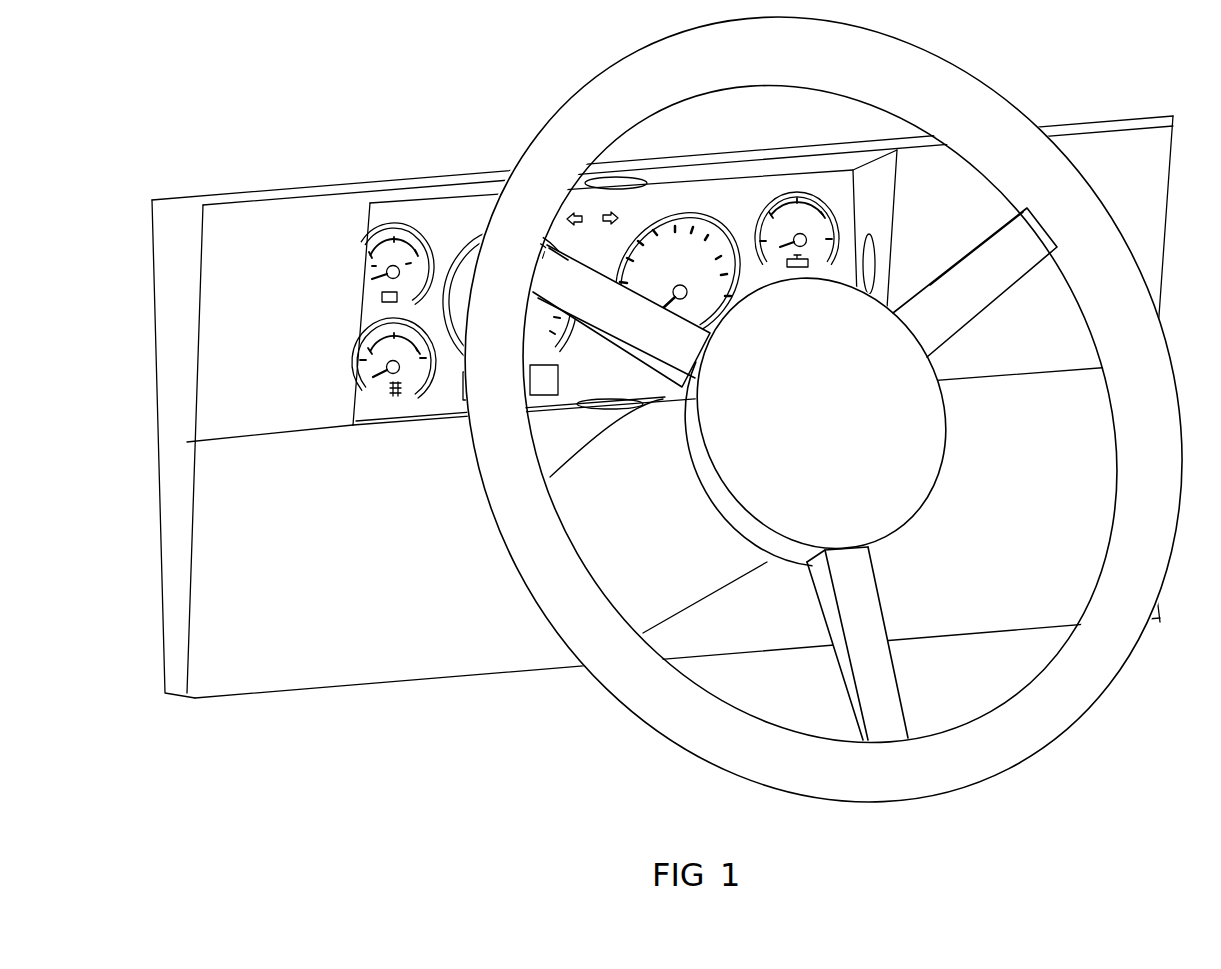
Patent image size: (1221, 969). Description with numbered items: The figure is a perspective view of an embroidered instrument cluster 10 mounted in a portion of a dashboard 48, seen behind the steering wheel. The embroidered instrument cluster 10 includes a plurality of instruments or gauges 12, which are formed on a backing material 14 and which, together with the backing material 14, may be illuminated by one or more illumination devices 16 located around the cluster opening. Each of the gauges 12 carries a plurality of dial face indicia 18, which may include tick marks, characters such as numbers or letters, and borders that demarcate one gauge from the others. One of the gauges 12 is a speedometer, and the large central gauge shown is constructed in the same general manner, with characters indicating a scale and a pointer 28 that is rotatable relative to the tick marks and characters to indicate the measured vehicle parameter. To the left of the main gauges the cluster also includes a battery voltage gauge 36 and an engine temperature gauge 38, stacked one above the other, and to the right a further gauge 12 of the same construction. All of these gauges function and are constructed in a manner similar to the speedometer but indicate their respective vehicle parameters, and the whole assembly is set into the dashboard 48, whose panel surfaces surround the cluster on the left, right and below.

The embroidered instrument cluster 10 is at (460, 213).
The gauges 12 is at (443, 398).
The backing material 14 is at (583, 255).
The illumination devices 16 is at (630, 178).
The dial face indicia 18 is at (727, 222).
The pointer 28 is at (676, 268).
The battery voltage gauge 36 is at (358, 298).
The engine temperature gauge 38 is at (353, 415).
The dashboard 48 is at (244, 300).